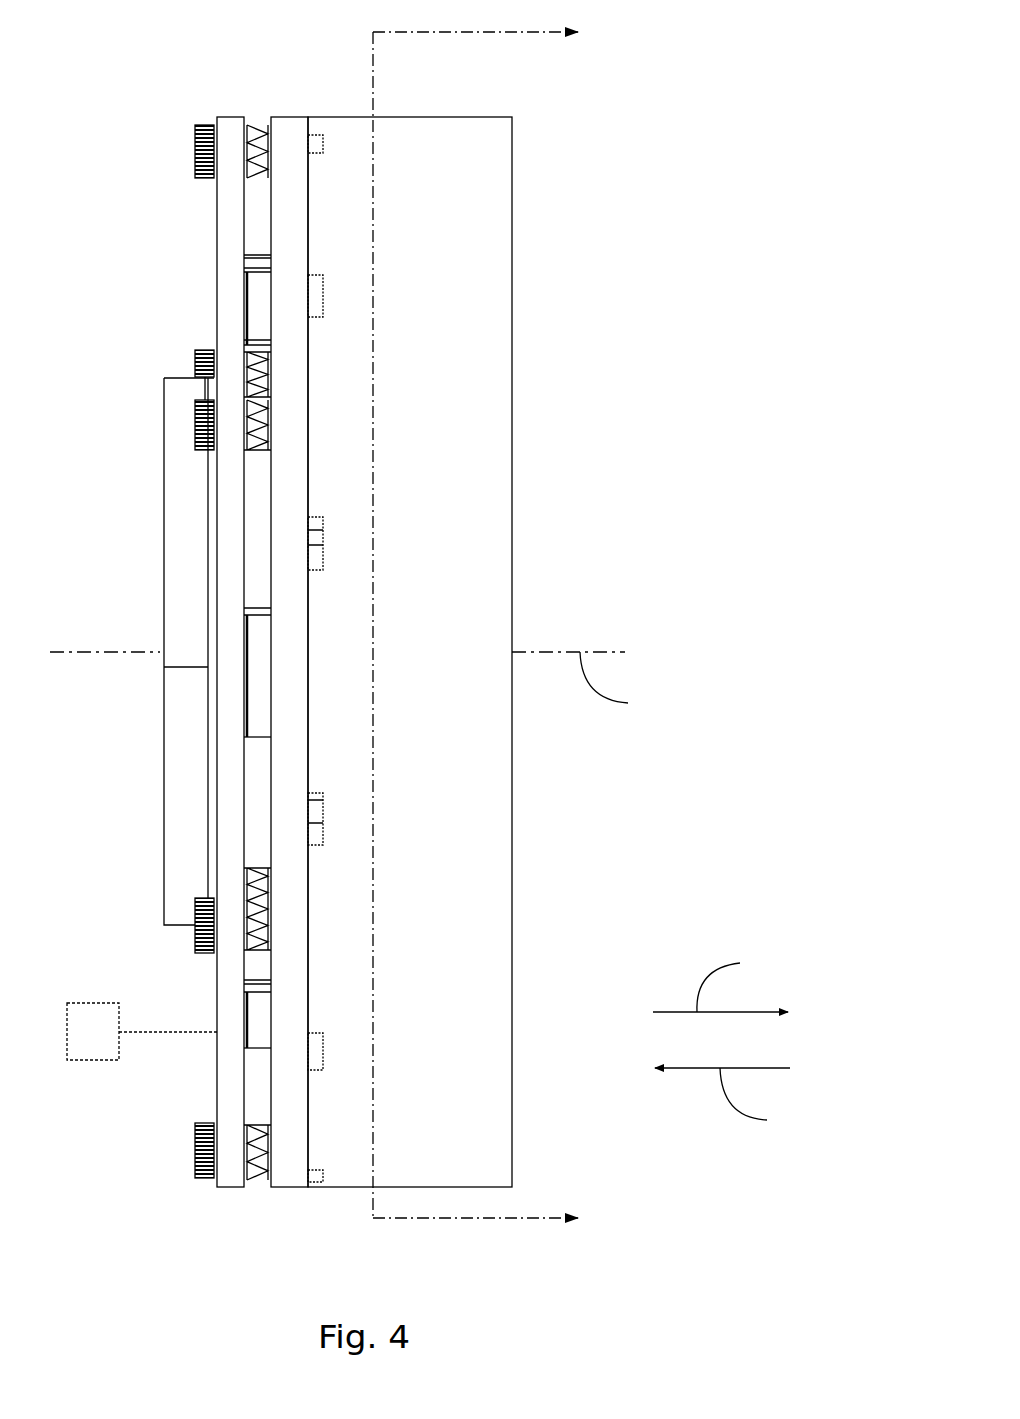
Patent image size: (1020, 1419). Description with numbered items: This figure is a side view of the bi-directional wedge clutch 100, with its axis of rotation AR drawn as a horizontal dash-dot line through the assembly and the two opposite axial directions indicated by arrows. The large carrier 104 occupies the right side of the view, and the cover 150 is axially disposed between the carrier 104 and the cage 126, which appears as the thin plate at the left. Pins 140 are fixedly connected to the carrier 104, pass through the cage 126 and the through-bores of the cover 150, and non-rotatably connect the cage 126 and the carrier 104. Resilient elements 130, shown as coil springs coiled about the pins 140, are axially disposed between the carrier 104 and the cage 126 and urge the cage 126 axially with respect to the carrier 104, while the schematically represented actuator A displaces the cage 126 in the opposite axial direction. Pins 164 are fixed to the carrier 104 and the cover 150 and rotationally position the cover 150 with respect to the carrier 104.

The bi-directional wedge clutch 100 is at (733, 152).
The carrier 104 is at (413, 117).
The cage 126 is at (217, 315).
The resilient elements 130 is at (250, 125).
The pins 140 is at (195, 148).
The cover 150 is at (292, 117).
The pins 164 is at (258, 262).